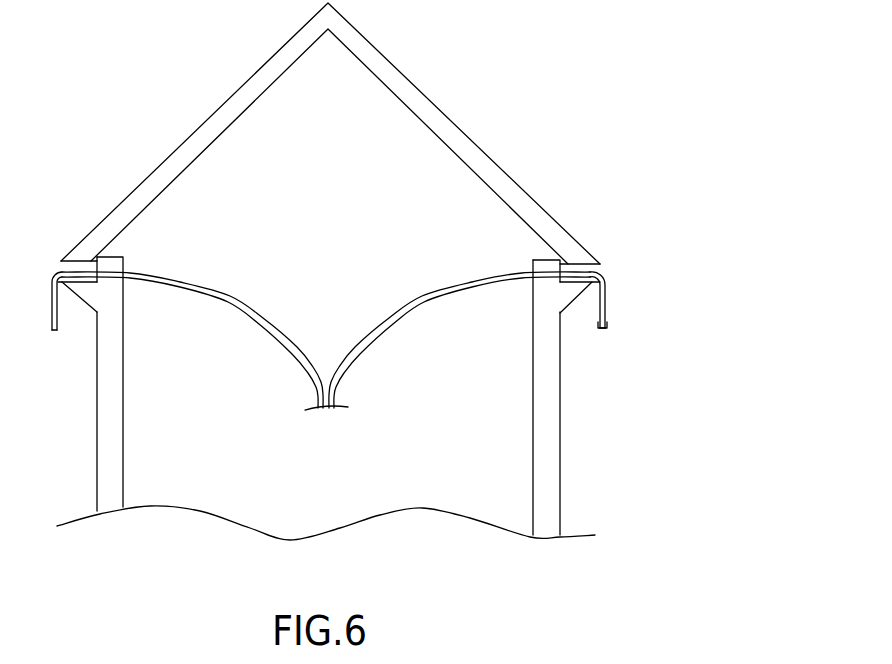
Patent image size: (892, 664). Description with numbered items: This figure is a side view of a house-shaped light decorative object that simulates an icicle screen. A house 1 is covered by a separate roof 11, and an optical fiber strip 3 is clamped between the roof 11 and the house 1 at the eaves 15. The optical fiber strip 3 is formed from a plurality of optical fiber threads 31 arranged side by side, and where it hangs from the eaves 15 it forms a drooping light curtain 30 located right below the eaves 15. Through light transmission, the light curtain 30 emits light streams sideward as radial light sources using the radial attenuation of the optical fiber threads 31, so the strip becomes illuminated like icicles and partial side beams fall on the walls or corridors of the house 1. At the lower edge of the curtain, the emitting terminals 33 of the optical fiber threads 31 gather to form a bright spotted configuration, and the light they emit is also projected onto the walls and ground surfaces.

The house 1 is at (547, 425).
The optical fiber strip 3 is at (326, 315).
The roof 11 is at (418, 90).
The eaves 15 is at (563, 290).
The light curtain 30 is at (600, 297).
The optical fiber threads 31 is at (247, 315).
The emitting terminals 33 is at (601, 330).